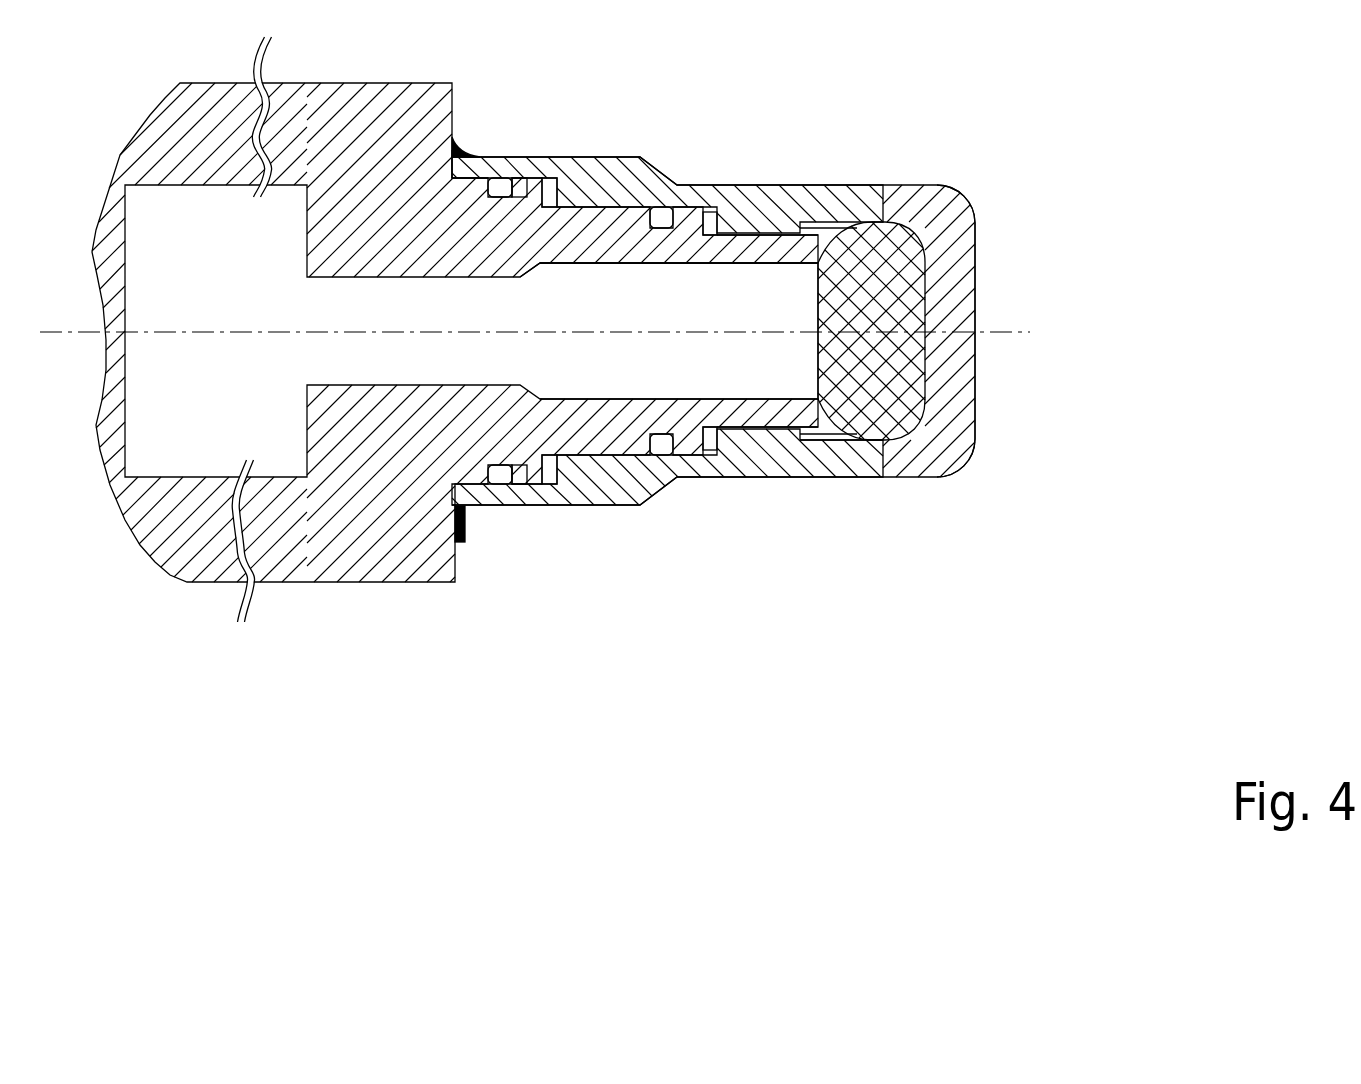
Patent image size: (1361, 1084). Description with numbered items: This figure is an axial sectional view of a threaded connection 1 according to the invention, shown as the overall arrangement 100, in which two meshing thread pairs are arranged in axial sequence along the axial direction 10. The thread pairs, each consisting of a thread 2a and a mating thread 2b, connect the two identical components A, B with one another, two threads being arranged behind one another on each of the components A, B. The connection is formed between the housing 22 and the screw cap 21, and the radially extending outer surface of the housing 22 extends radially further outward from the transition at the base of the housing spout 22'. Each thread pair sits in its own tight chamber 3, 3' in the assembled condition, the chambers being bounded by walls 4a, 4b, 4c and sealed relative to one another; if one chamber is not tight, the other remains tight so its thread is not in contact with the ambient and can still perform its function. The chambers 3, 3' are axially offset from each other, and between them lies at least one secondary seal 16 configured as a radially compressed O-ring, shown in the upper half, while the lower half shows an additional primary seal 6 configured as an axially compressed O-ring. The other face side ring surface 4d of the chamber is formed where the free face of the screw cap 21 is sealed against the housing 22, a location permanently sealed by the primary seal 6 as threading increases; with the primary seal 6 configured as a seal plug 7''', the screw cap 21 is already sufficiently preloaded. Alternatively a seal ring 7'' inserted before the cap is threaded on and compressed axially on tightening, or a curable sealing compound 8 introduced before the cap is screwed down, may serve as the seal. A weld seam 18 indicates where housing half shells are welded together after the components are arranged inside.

The connection assembly 100 is at (539, 329).
The threaded connection 1 is at (760, 264).
The thread 2a is at (600, 205).
The thread 2b is at (667, 331).
The chamber 3 is at (774, 326).
The chamber 3' is at (546, 333).
The wall 4a is at (840, 446).
The wall 4b is at (813, 438).
The wall 4c is at (887, 434).
The face side ring surface 4d is at (440, 195).
The primary seal 6 is at (663, 456).
The seal ring 7'' is at (493, 553).
The seal plug 7''' is at (871, 331).
The sealing compound 8 is at (462, 150).
The axial direction 10 is at (985, 332).
The secondary seal 16 is at (497, 197).
The weld seam 18 is at (451, 165).
The screw cap 21 is at (963, 232).
The housing 22 is at (455, 329).
The housing spout 22' is at (669, 279).
The component A is at (348, 503).
The component B is at (938, 215).